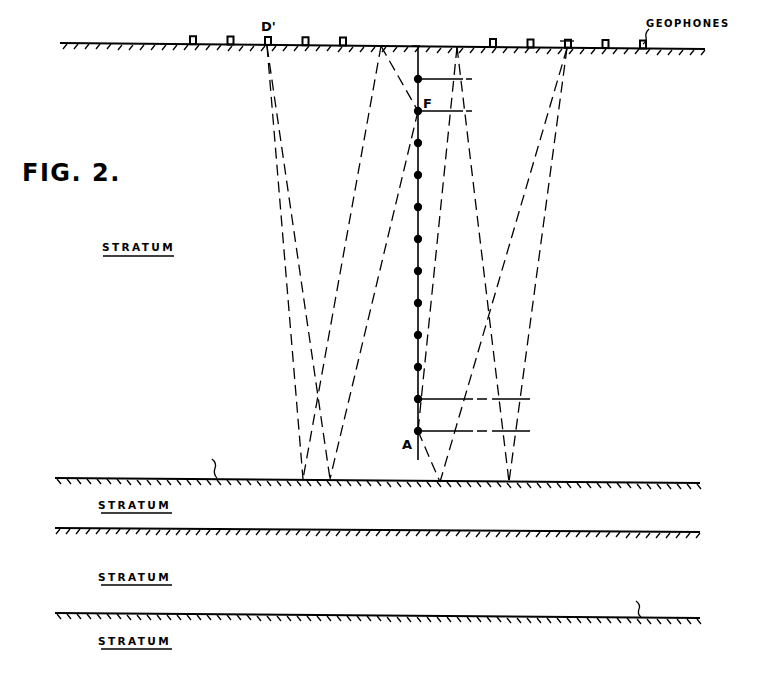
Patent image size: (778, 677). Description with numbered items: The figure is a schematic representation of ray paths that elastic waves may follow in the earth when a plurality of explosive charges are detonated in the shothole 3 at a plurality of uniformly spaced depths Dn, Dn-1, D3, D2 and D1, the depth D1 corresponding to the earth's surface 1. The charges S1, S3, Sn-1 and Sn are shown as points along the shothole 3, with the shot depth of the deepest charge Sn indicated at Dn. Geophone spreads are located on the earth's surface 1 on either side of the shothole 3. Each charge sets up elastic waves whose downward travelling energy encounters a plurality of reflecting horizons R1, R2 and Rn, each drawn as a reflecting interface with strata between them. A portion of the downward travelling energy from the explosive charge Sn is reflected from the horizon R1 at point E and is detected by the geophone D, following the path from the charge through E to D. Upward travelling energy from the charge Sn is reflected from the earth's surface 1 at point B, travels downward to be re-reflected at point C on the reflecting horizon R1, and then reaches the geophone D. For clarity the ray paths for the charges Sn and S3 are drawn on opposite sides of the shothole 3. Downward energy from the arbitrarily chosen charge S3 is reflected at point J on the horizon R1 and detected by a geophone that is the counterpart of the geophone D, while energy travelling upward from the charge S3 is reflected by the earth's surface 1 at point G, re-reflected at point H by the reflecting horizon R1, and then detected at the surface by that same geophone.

The earth's surface 1 is at (113, 43).
The shothole 3 is at (417, 287).
The explosive charge S1 is at (421, 52).
The explosive charge S3 is at (417, 111).
The explosive charge Sn-1 is at (417, 399).
The explosive charge Sn is at (417, 431).
The depth D1 is at (419, 36).
The depth D2 is at (457, 80).
The depth D3 is at (457, 113).
The depth Dn-1 is at (490, 399).
The depth Dn is at (537, 433).
The point H is at (324, 271).
The point J is at (342, 271).
The point G is at (381, 46).
The point B is at (457, 50).
The point C is at (512, 272).
The point E is at (492, 272).
The geophone D is at (567, 30).
The reflecting horizon R1 is at (379, 469).
The reflecting horizon R2 is at (379, 531).
The reflecting horizon Rn is at (379, 609).